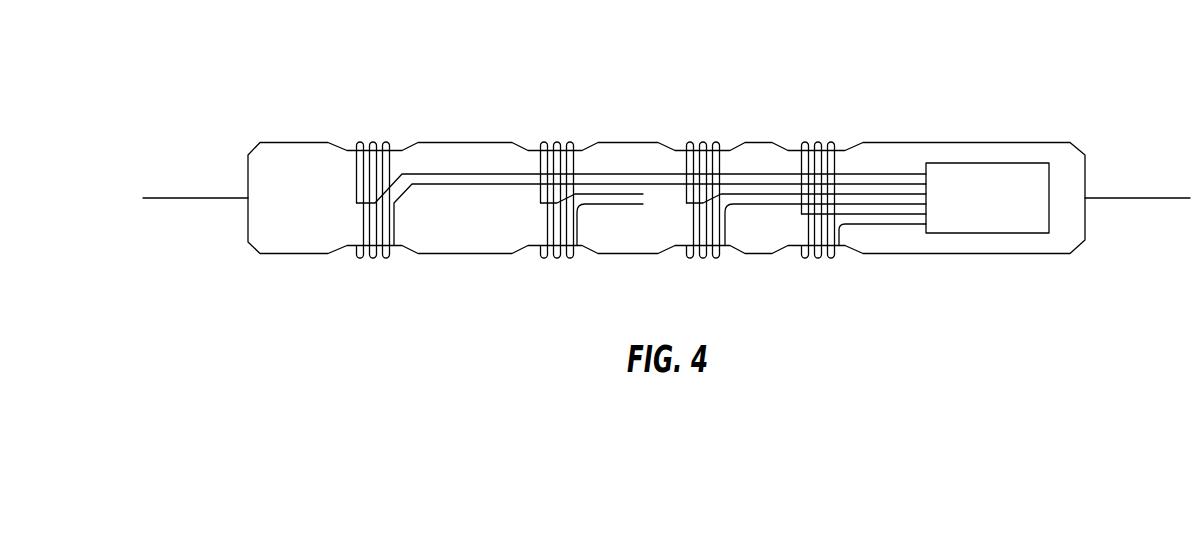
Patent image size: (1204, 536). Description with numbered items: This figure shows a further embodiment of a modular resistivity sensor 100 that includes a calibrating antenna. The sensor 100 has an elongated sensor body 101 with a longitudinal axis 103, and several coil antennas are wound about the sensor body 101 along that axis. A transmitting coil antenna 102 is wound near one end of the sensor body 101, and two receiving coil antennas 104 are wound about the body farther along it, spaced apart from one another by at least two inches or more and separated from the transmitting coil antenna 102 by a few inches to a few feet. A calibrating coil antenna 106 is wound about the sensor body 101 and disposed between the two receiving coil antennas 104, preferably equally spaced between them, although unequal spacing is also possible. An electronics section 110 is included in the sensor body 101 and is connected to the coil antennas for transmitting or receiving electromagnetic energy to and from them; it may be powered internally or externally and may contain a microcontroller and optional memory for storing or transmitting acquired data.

The modular resistivity sensor 100 is at (1090, 62).
The sensor body 101 is at (900, 142).
The transmitting coil antenna 102 is at (386, 258).
The longitudinal axis 103 is at (1137, 198).
The receiving coil antennas 104 is at (570, 258).
The calibrating coil antenna 106 is at (716, 258).
The electronics section 110 is at (988, 233).